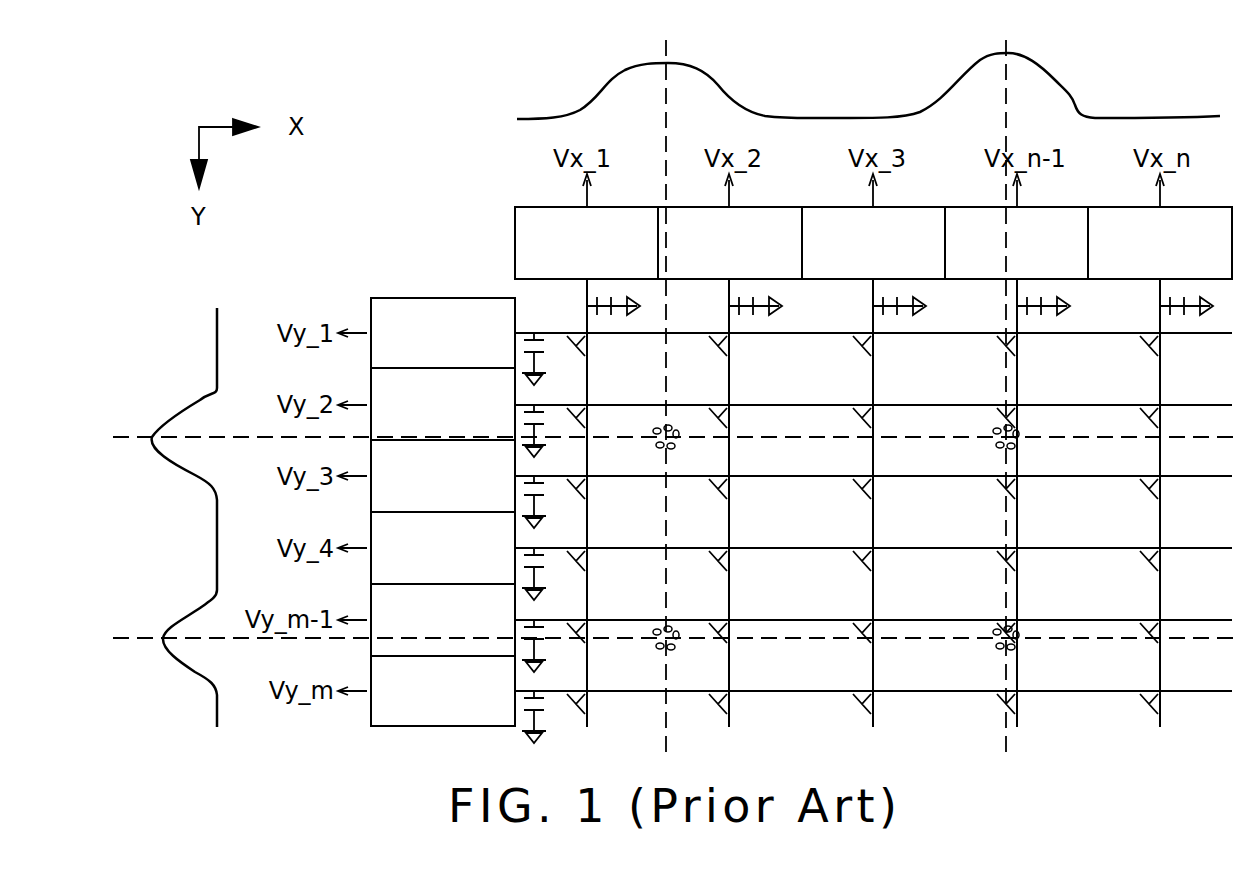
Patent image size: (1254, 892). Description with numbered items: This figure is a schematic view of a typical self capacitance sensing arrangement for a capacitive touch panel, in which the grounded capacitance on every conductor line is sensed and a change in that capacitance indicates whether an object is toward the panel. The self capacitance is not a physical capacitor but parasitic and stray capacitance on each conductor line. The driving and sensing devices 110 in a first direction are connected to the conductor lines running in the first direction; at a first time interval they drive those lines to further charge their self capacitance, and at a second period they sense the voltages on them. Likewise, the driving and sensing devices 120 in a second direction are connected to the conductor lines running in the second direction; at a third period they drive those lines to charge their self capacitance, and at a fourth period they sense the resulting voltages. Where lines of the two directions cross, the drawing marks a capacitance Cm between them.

The driving and sensing devices in a first direction 110 is at (437, 297).
The driving and sensing devices in a second direction 120 is at (541, 207).
The mutual capacitance between electrodes Cm is at (887, 528).